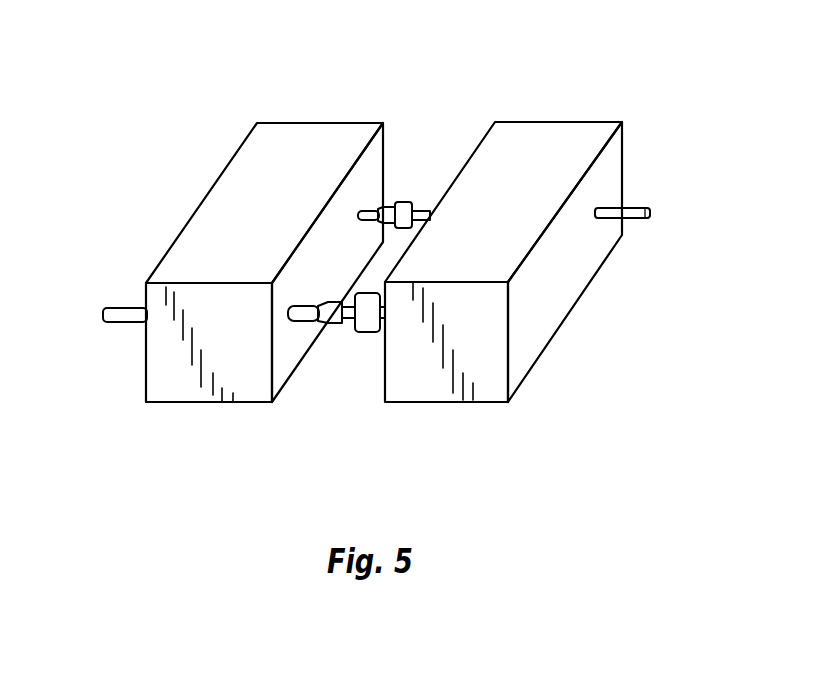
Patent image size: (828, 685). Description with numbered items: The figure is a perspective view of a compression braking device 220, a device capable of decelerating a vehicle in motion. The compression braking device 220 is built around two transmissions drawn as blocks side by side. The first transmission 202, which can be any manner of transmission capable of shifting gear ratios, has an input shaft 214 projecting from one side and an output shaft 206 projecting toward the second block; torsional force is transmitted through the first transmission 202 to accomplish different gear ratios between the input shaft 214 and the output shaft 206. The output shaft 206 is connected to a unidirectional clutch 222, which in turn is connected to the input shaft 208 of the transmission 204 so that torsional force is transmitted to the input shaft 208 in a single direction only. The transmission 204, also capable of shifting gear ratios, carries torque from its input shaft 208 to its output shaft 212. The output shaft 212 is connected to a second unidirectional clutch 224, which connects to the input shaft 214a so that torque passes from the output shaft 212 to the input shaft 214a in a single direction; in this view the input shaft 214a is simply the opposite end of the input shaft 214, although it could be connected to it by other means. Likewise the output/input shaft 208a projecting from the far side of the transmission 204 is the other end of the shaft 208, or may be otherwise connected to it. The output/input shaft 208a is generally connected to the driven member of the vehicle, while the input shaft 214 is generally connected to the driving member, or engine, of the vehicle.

The first transmission 202 is at (265, 212).
The transmission 204 is at (547, 170).
The output shaft 206 is at (368, 209).
The input shaft 208 is at (428, 210).
The output/input shaft 208a is at (637, 217).
The output shaft 212 is at (345, 327).
The input shaft 214 is at (120, 316).
The input shaft 214a is at (332, 325).
The compression braking device 220 is at (407, 116).
The unidirectional clutch 222 is at (403, 201).
The unidirectional clutch 224 is at (360, 332).